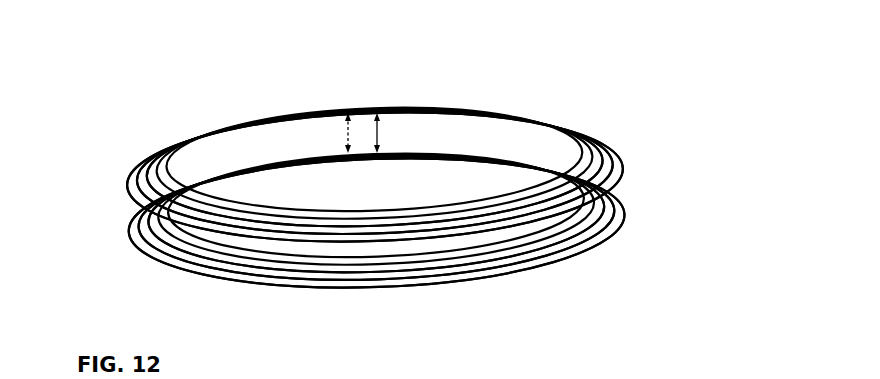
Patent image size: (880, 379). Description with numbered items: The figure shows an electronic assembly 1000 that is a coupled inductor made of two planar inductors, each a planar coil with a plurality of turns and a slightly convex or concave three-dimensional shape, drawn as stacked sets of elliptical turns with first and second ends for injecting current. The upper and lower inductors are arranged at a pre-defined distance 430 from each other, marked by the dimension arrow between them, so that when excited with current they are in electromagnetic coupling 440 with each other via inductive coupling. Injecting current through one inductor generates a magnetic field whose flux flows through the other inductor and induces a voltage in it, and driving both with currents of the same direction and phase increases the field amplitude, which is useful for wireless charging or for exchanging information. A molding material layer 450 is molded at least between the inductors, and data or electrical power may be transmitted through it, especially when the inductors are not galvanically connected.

The electronic assembly 1000 is at (354, 160).
The pre-defined distance 430 is at (380, 114).
The electromagnetic coupling 440 is at (346, 115).
The molding material layer 450 is at (472, 149).